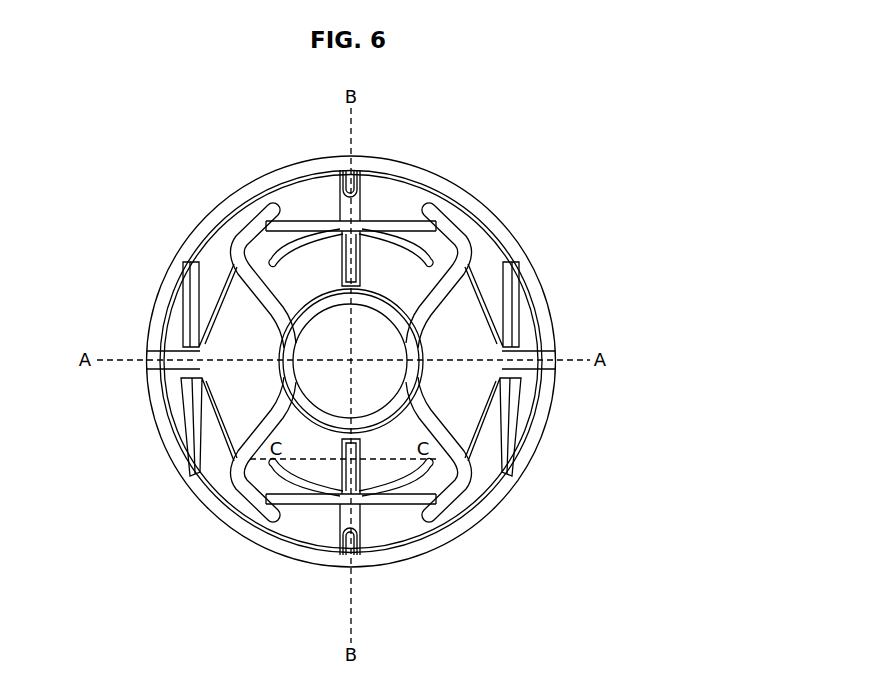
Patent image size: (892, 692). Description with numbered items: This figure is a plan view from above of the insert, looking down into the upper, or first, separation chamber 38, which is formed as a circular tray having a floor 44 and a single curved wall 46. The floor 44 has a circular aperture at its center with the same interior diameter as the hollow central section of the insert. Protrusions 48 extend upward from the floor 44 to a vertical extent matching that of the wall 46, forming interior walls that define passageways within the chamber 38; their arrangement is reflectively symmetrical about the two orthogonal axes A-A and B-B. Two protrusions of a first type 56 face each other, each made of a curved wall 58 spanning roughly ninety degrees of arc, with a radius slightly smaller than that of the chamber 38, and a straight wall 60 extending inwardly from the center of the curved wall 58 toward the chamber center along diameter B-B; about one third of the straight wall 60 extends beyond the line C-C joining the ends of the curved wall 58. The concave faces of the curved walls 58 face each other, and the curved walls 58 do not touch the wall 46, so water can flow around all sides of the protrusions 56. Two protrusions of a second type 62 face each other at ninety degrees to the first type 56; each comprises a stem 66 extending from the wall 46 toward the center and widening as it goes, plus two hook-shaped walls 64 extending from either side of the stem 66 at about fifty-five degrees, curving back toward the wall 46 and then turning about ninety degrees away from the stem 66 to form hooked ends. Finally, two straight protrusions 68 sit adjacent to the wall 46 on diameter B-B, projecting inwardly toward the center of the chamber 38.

The first separation chamber 38 is at (652, 184).
The floor 44 is at (227, 318).
The curved wall 46 is at (152, 398).
The protrusions 48 is at (235, 478).
The protrusions of a first type 56 is at (365, 230).
The curved wall 58 is at (328, 226).
The straight wall 60 is at (360, 266).
The protrusions of a second type 62 is at (451, 355).
The hook-shaped walls 64 is at (240, 273).
The stem 66 is at (181, 360).
The straight protrusions 68 is at (358, 183).